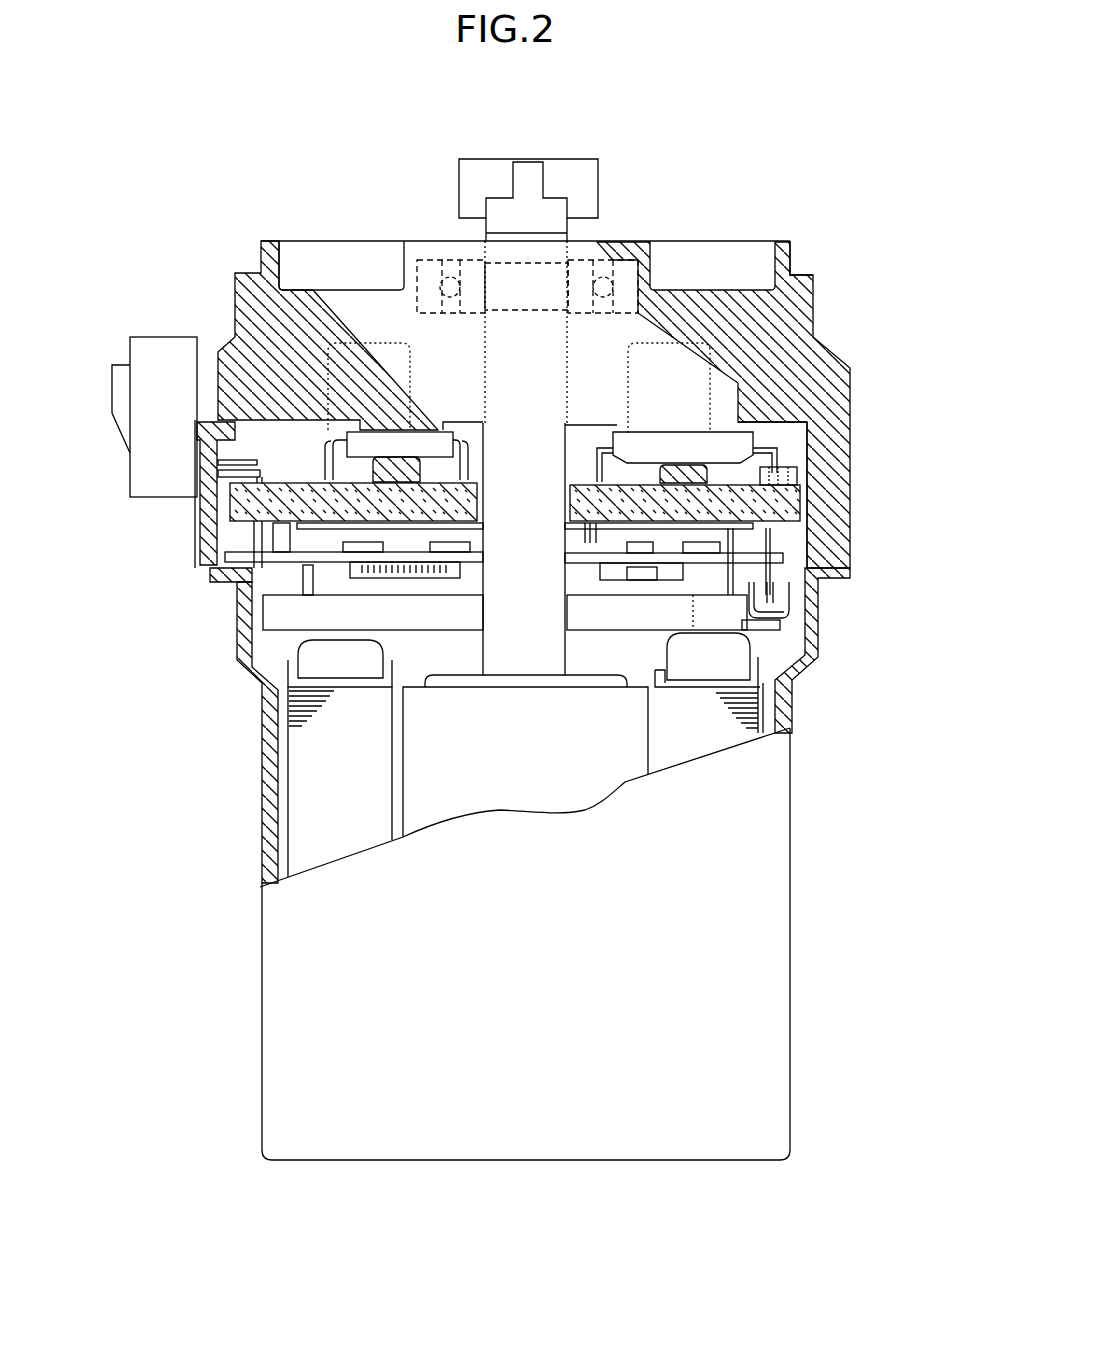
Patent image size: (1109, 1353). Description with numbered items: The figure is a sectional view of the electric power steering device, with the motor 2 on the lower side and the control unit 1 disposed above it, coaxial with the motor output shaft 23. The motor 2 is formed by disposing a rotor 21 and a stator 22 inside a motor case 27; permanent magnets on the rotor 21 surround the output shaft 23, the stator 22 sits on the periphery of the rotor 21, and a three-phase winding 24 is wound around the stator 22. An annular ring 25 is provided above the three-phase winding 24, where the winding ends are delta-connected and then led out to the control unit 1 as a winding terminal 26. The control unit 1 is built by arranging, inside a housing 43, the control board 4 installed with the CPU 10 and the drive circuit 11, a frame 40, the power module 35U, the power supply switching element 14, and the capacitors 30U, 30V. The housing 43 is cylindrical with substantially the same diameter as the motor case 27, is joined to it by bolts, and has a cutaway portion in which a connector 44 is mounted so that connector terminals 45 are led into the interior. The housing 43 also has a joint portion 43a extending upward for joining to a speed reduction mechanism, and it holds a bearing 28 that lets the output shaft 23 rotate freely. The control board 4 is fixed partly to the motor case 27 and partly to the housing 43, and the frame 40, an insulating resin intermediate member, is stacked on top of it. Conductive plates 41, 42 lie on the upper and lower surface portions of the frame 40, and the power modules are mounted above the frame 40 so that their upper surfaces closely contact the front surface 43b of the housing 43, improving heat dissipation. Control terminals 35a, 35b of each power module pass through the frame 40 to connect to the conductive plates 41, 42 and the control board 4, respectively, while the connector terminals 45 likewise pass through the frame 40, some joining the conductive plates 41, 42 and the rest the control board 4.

The control unit 1 is at (857, 507).
The motor 2 is at (783, 982).
The control board 4 is at (212, 570).
The CPU 10 is at (350, 567).
The initial stage drive circuit 11 is at (685, 580).
The power supply switching element 14 is at (433, 430).
The rotor 21 is at (617, 777).
The stator 22 is at (295, 749).
The output shaft 23 is at (743, 677).
The three-phase winding 24 is at (788, 697).
The annular ring 25 is at (258, 645).
The winding terminal 26 is at (815, 578).
The motor case 27 is at (258, 685).
The bearing 28 is at (437, 257).
The capacitor 30U is at (687, 343).
The capacitor 30V is at (320, 527).
The control terminal 35a is at (765, 435).
The control terminal 35b is at (600, 445).
The power module 35U is at (785, 443).
The frame 40 is at (797, 517).
The conductive plate 41 is at (798, 425).
The conductive plate 42 is at (240, 462).
The housing 43 is at (850, 483).
The joint portion 43a is at (790, 252).
The front surface 43b is at (752, 423).
The connector 44 is at (132, 337).
The connector terminals 45 is at (217, 413).